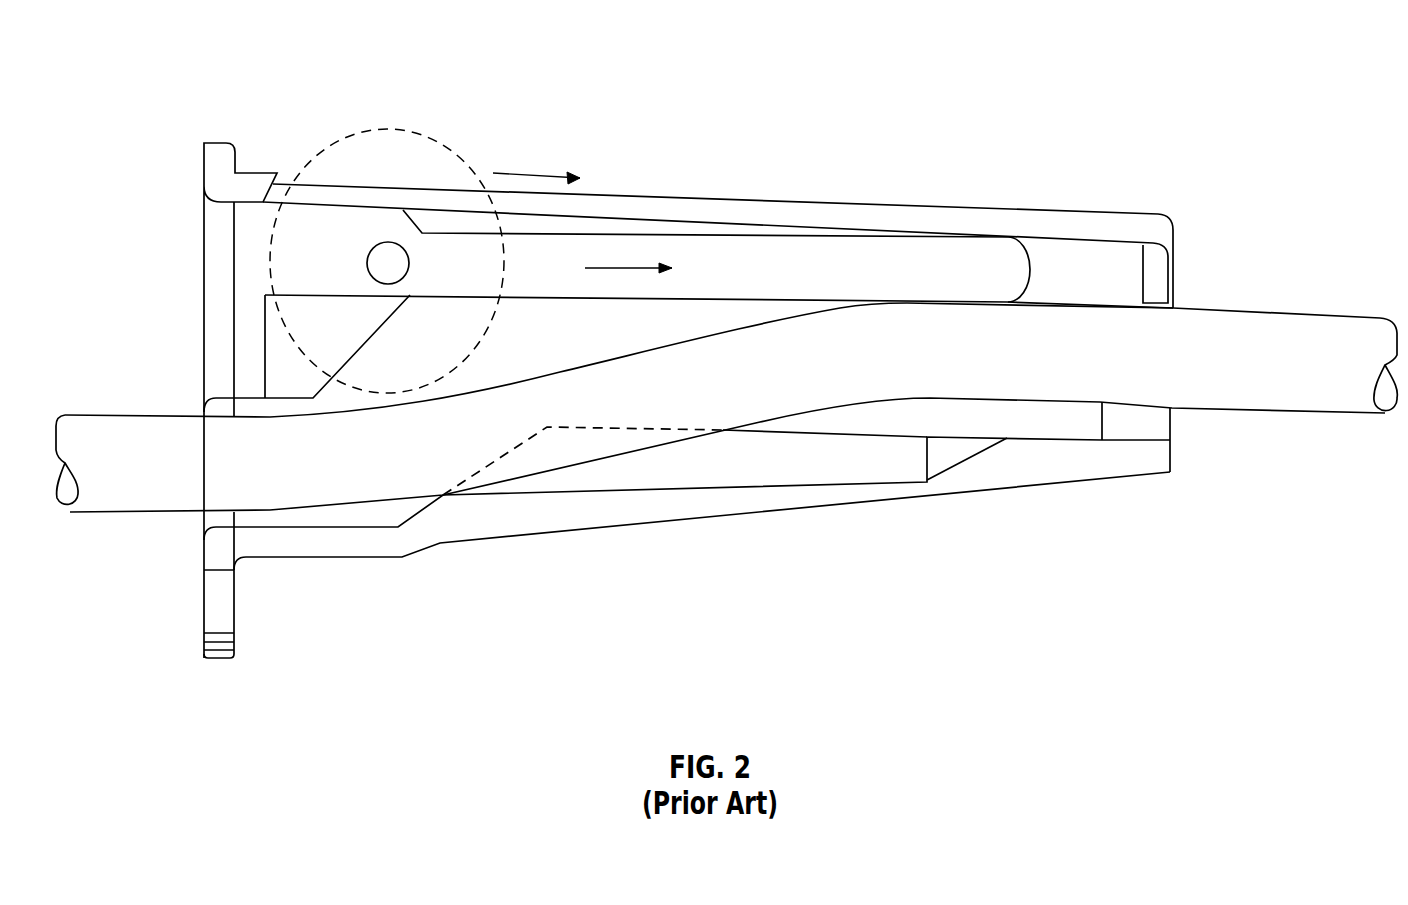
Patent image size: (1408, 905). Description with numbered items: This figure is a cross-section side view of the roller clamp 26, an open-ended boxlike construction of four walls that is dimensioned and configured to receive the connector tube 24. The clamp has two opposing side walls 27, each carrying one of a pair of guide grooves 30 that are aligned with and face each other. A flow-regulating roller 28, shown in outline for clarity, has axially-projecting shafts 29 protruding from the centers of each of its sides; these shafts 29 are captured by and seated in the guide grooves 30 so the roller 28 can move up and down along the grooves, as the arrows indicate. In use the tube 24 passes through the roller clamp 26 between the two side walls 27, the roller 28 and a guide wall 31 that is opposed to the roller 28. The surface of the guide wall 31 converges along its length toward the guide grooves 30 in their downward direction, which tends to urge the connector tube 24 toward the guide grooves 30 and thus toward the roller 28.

The connector tube 24 is at (126, 413).
The roller clamp 26 is at (243, 78).
The side walls 27 is at (1040, 222).
The flow-regulating roller 28 is at (363, 134).
The axially-projecting shafts 29 is at (378, 252).
The guide grooves 30 is at (633, 233).
The guide wall 31 is at (583, 530).